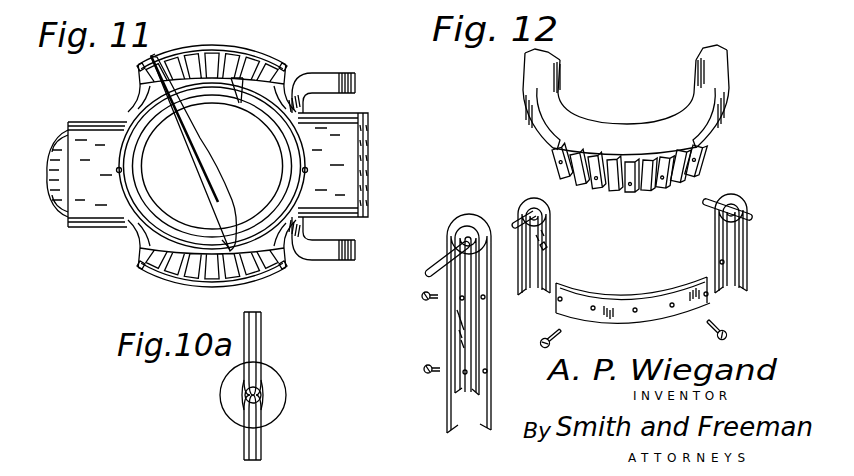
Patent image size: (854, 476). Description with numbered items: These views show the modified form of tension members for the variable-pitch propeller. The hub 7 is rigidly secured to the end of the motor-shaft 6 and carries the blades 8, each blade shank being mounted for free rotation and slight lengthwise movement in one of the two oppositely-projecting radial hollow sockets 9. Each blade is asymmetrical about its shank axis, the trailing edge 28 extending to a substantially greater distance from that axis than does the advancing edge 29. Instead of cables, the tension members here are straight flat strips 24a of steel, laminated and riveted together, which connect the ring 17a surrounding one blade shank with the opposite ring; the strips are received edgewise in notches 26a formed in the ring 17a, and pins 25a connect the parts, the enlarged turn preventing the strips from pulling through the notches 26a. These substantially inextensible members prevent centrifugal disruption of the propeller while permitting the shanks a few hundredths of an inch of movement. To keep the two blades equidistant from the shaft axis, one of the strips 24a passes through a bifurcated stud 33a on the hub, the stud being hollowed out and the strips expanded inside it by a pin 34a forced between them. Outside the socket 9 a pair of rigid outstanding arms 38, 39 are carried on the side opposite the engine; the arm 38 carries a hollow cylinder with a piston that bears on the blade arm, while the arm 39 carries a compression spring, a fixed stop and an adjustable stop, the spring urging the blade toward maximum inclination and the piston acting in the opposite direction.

In FIG. 11, the motor-shaft 6 is at (56, 134).
In FIG. 11, the hub 7 is at (92, 122).
In FIG. 11, the blade 8 is at (199, 156).
In FIG. 11, the socket 9 is at (131, 205).
In FIG. 11, the ring 17a is at (293, 194).
In FIG. 12, the ring 17a is at (722, 72).
In FIG. 10A, the flat strip tension member 24a is at (254, 354).
In FIG. 12, the flat strip tension member 24a is at (451, 405).
In FIG. 11, the pin 25a is at (240, 104).
In FIG. 12, the pin 25a is at (452, 256).
In FIG. 12, the notch 26a is at (688, 180).
In FIG. 11, the trailing edge 28 is at (150, 57).
In FIG. 11, the advancing edge 29 is at (220, 245).
In FIG. 10A, the bifurcated stud 33a is at (228, 390).
In FIG. 10A, the pin 34a is at (246, 397).
In FIG. 11, the arm 38 is at (330, 73).
In FIG. 11, the arm 39 is at (331, 260).